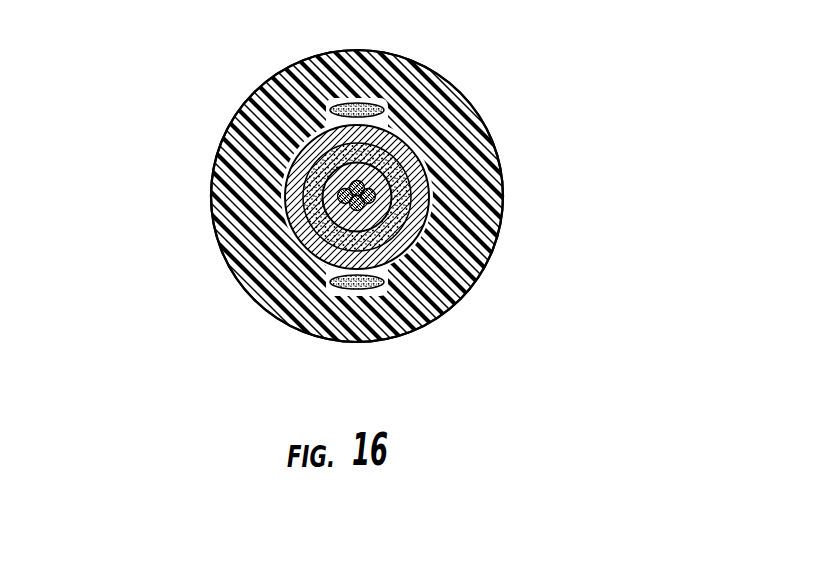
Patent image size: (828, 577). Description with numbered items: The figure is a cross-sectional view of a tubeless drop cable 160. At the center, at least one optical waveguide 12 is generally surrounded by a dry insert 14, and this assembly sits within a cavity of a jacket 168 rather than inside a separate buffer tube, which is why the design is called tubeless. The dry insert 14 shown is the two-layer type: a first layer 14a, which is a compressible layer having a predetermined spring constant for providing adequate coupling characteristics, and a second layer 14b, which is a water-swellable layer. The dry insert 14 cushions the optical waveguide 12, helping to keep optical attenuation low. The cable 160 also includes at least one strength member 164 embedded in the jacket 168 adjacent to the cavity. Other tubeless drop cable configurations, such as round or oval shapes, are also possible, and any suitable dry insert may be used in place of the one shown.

The cable 160 is at (203, 73).
The jacket 168 is at (460, 262).
The strength member 164 is at (368, 290).
The dry insert 14 is at (359, 170).
The second layer 14b is at (383, 147).
The first layer 14a is at (395, 185).
The optical waveguide 12 is at (345, 203).